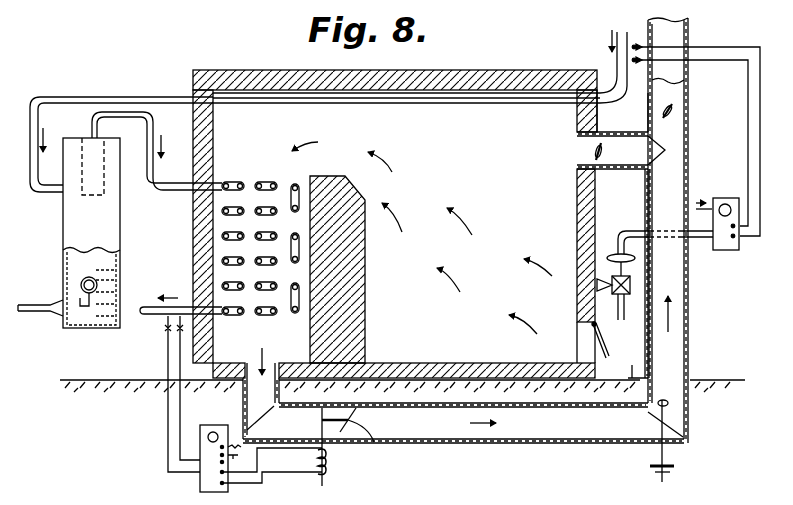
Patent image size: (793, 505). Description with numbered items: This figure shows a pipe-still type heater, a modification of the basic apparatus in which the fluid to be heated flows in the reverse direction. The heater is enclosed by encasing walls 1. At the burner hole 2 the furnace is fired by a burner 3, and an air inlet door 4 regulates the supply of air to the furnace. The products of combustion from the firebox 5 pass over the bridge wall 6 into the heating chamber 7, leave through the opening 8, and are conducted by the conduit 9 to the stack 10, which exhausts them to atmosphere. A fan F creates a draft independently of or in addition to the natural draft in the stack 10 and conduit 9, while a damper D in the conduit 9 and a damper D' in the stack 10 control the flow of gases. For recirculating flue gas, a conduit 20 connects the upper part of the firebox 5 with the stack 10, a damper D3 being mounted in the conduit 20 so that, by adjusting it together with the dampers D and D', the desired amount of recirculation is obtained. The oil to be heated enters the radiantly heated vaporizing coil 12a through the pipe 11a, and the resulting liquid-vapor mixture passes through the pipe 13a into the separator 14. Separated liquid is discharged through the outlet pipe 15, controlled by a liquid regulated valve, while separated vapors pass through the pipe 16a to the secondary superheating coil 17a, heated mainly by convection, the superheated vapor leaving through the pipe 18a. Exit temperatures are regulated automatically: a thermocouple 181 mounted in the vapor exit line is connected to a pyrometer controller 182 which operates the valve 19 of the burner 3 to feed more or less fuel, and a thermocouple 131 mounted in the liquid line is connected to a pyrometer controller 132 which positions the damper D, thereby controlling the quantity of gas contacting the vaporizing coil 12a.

The encasing walls 1 is at (466, 72).
The burner hole 2 is at (577, 273).
The burner 3 is at (596, 290).
The air inlet door 4 is at (606, 353).
The firebox 5 is at (422, 238).
The bridge wall 6 is at (358, 305).
The heating chamber 7 is at (215, 226).
The opening 8 is at (267, 372).
The conduit 9 is at (557, 441).
The stack 10 is at (672, 326).
The pipe 11a is at (607, 61).
The vaporizing coil 12a is at (468, 98).
The pipe 13a is at (44, 193).
The separator 14 is at (91, 233).
The outlet pipe 15 is at (45, 304).
The pipe 16a is at (170, 190).
The superheating coil 17a is at (222, 240).
The pipe 18a is at (177, 291).
The valve 19 is at (625, 310).
The conduit 20 is at (624, 173).
The thermocouple 131 is at (166, 322).
The pyrometer controller 132 is at (199, 482).
The thermocouple 181 is at (612, 111).
The pyrometer controller 182 is at (723, 193).
The damper D is at (358, 447).
The damper D' is at (690, 114).
The damper D3 is at (594, 153).
The fan F is at (668, 421).